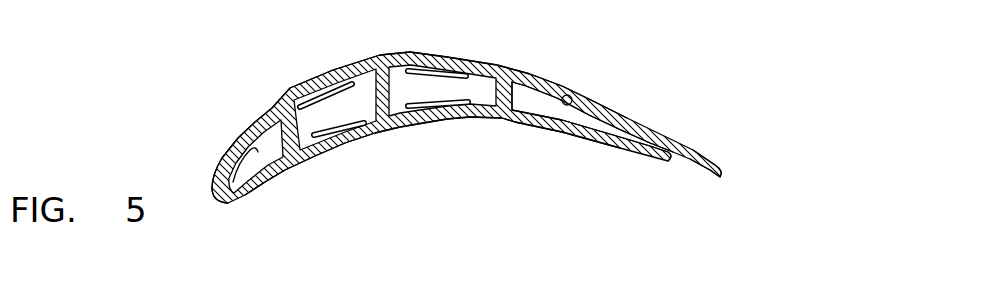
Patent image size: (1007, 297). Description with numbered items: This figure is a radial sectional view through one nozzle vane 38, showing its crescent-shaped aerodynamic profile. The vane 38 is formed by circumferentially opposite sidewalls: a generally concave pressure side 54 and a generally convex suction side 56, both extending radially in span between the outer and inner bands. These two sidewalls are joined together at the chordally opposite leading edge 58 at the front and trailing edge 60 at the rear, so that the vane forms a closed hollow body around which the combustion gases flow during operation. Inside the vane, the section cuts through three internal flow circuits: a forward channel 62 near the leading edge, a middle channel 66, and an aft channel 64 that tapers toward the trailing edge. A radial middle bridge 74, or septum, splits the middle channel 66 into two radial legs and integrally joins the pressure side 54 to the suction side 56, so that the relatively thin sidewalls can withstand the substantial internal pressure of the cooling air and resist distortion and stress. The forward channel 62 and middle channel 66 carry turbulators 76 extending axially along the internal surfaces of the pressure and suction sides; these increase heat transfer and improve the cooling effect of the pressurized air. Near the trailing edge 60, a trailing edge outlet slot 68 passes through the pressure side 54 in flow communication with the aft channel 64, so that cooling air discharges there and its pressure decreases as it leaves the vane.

The vane 38 is at (634, 114).
The pressure side 54 is at (446, 121).
The suction side 56 is at (385, 57).
The leading edge 58 is at (222, 206).
The trailing edge 60 is at (725, 175).
The forward channel 62 is at (246, 131).
The aft channel 64 is at (569, 94).
The middle channel 66 is at (352, 115).
The trailing edge outlet slots 68 is at (671, 160).
The middle bridge 74 is at (376, 126).
The turbulators 76 is at (297, 99).